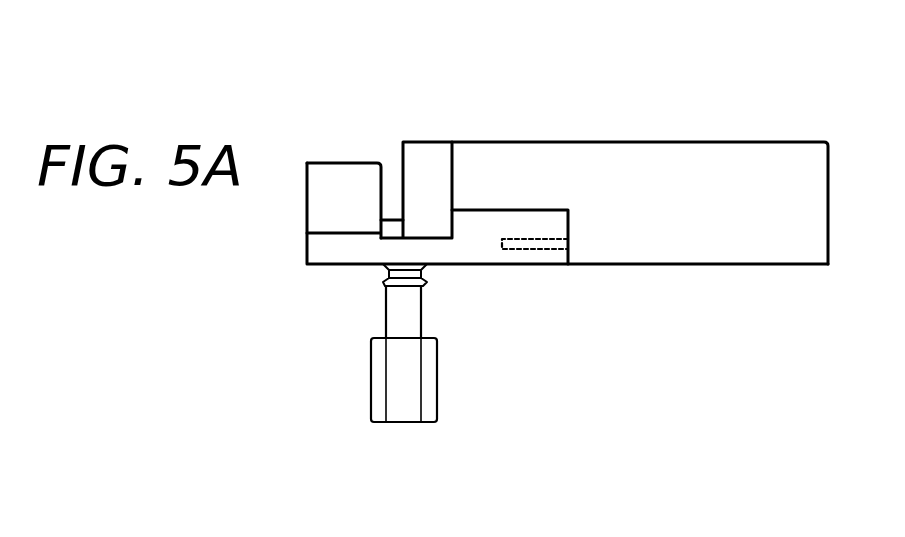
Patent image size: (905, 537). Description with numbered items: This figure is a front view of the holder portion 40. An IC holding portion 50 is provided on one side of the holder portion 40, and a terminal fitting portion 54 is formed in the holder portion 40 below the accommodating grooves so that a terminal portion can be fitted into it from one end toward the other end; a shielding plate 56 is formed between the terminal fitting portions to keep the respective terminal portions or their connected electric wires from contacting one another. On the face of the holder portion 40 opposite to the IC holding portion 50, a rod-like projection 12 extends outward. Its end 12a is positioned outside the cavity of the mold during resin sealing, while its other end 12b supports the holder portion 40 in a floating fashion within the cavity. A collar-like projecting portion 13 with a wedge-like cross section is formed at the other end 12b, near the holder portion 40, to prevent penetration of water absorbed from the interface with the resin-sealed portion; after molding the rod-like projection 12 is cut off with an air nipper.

The holder portion 40 is at (508, 112).
The IC holding portion 50 is at (352, 180).
The shielding plate 56 is at (712, 160).
The terminal fitting portion 54 is at (548, 249).
The projecting portion 13 is at (383, 282).
The rod-like projection 12 is at (512, 287).
The end of the rod-like projection 12a is at (447, 337).
The other end of the rod-like projection 12b is at (447, 268).